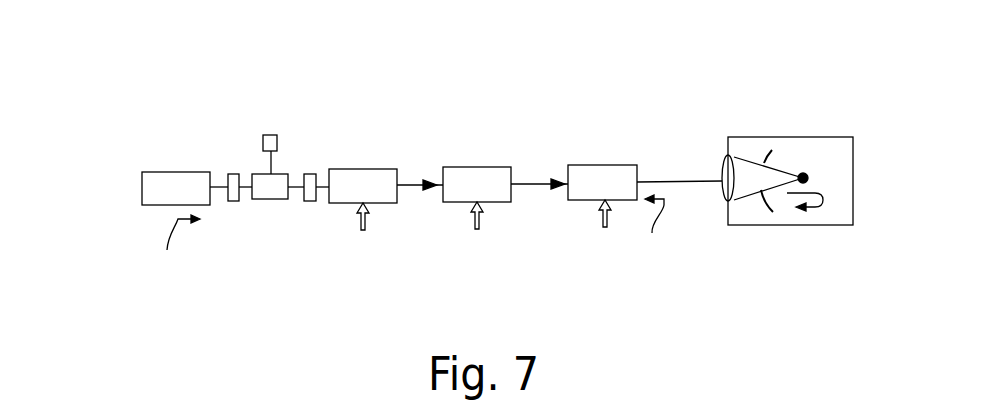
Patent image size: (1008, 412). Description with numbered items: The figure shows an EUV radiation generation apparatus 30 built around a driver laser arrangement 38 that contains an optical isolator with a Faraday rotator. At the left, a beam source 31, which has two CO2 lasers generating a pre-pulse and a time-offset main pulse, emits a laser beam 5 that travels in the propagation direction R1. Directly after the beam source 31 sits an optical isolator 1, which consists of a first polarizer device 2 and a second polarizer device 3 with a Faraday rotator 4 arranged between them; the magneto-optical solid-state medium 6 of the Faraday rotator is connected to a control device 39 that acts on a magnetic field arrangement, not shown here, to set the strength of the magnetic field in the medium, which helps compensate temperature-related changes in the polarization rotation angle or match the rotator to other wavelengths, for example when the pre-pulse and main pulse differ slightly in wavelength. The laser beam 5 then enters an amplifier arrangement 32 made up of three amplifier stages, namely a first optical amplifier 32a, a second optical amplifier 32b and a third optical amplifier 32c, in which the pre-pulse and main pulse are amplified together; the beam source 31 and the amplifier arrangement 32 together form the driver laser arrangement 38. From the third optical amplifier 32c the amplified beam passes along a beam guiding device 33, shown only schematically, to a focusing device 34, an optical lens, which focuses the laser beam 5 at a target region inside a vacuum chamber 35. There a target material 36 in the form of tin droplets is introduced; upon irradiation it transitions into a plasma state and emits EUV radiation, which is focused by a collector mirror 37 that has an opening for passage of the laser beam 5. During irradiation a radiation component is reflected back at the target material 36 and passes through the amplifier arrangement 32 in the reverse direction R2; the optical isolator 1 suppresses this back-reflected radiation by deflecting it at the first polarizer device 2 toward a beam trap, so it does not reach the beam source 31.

The EUV radiation generation apparatus 30 is at (136, 121).
The driver laser arrangement 38 is at (132, 82).
The beam source 31 is at (180, 186).
The laser beam 5 is at (217, 184).
The optical isolator 1 is at (350, 267).
The first polarizer device 2 is at (233, 201).
The Faraday rotator 4 is at (258, 200).
The magneto-optical solid-state medium 6 is at (271, 200).
The second polarizer device 3 is at (310, 201).
The control device 39 is at (269, 135).
The propagation direction R1 is at (176, 247).
The amplifier arrangement 32 is at (652, 115).
The first optical amplifier 32a is at (378, 178).
The second optical amplifier 32b is at (490, 178).
The third optical amplifier 32c is at (615, 176).
The beam guiding device 33 is at (707, 183).
The reverse direction R2 is at (659, 228).
The focusing device 34 is at (726, 165).
The vacuum chamber 35 is at (792, 137).
The target material 36 is at (806, 175).
The collector mirror 37 is at (764, 208).